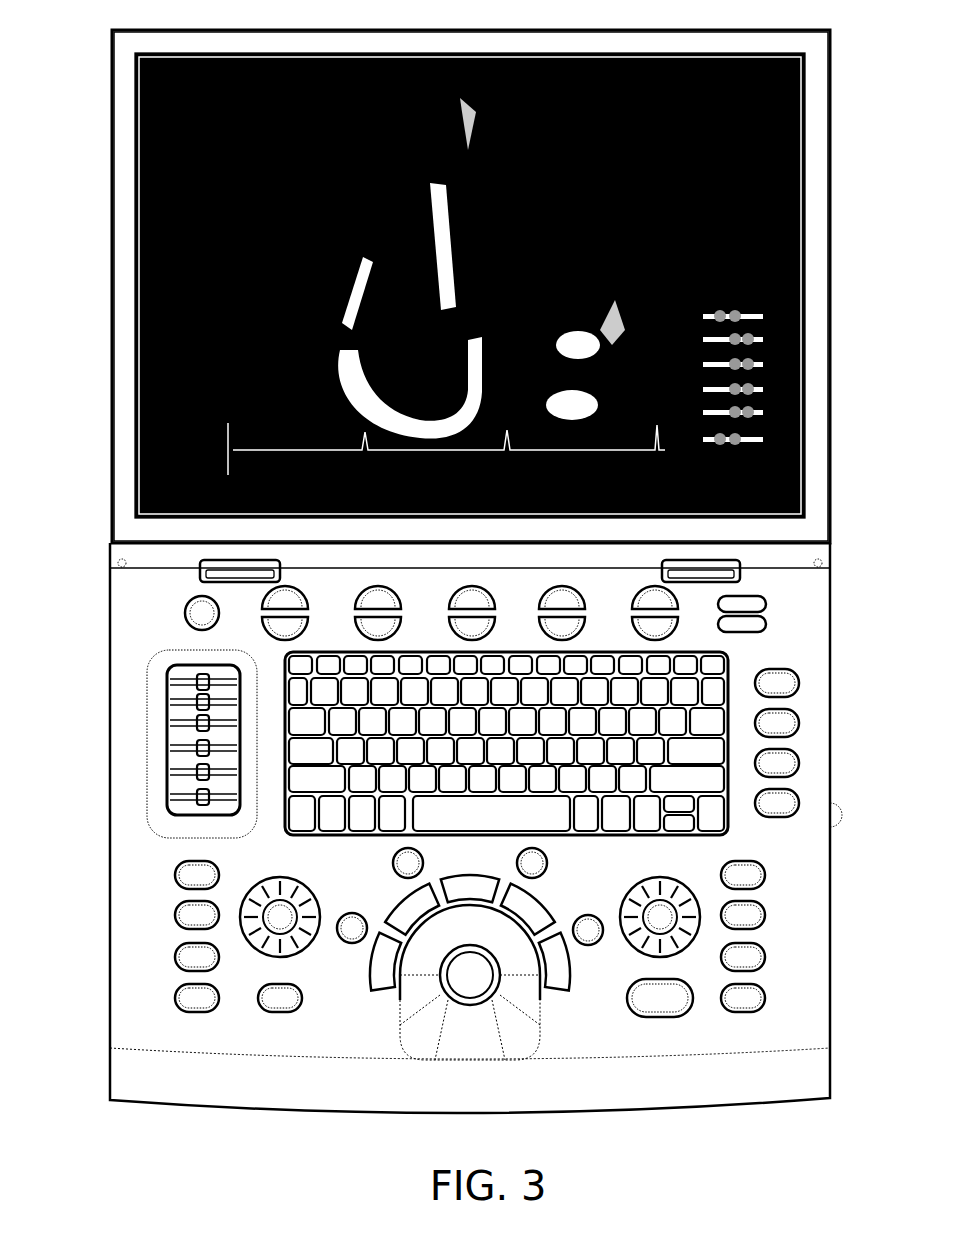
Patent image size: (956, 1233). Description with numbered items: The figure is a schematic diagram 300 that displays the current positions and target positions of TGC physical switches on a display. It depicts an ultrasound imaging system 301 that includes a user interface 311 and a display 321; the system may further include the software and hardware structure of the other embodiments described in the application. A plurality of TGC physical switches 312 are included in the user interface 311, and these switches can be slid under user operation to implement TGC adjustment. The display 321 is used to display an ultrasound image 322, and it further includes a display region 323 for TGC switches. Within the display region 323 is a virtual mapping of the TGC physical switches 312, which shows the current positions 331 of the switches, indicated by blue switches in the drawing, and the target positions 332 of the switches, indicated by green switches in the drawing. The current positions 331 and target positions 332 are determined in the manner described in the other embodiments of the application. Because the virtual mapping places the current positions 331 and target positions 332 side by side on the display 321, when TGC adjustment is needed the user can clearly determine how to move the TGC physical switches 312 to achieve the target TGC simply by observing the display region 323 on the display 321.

The schematic diagram 300 is at (928, 32).
The ultrasound imaging system 301 is at (848, 122).
The display 321 is at (407, 285).
The ultrasound image 322 is at (348, 225).
The display region 323 is at (688, 285).
The current positions 331 is at (733, 305).
The target positions 332 is at (753, 401).
The user interface 311 is at (776, 638).
The TGC physical switches 312 is at (196, 722).